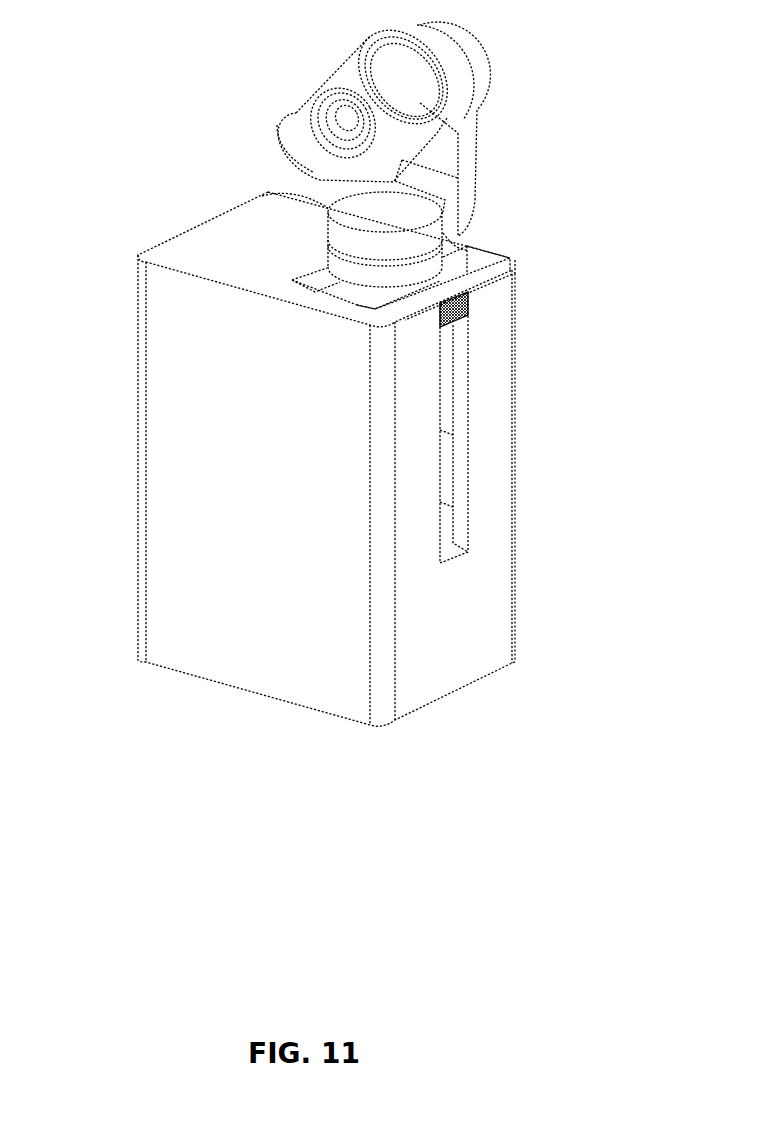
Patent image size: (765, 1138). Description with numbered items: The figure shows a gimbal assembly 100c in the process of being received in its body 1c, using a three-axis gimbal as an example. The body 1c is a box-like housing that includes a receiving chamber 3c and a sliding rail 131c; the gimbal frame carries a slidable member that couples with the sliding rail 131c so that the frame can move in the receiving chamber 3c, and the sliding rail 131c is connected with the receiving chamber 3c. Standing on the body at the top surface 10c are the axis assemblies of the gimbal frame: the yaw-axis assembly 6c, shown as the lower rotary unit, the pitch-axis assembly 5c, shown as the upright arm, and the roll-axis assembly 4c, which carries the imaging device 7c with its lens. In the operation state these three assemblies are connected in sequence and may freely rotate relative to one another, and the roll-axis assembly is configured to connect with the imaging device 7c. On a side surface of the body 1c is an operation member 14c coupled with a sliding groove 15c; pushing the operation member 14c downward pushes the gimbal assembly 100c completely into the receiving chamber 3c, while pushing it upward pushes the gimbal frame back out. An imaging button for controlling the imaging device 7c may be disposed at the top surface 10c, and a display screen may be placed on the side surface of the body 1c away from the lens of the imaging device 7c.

The gimbal assembly 100c is at (197, 29).
The top surface 10c is at (301, 409).
The body 1c is at (477, 625).
The receiving chamber 3c is at (477, 267).
The sliding rail 131c is at (345, 300).
The yaw-axis assembly 6c is at (368, 242).
The pitch-axis assembly 5c is at (475, 63).
The roll-axis assembly 4c is at (305, 173).
The imaging device 7c is at (342, 114).
The operation member 14c is at (472, 313).
The sliding groove 15c is at (460, 470).